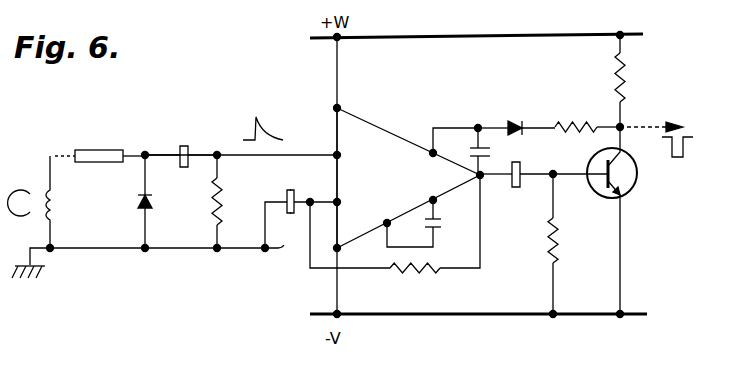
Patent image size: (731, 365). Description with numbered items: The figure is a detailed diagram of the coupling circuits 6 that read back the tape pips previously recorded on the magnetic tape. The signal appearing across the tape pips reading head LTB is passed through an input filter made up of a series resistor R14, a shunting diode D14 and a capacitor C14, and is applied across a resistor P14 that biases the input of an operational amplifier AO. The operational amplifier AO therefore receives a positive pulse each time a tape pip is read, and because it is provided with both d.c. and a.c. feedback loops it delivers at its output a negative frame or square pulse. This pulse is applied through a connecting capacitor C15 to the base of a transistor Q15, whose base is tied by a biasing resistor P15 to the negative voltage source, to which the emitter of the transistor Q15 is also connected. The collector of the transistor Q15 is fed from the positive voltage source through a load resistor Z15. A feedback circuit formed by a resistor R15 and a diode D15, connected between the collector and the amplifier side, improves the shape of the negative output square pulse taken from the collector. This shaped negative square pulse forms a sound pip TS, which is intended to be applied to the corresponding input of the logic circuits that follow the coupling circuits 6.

The coupling circuits 6 is at (288, 97).
The tape pips reading head LTB is at (39, 217).
The resistor R14 is at (90, 152).
The capacitor C14 is at (176, 150).
The shunting diode D14 is at (136, 192).
The resistor P14 is at (225, 200).
The operational amplifier AO is at (400, 190).
The diode D15 is at (508, 123).
The resistor R15 is at (578, 123).
The load resistor Z15 is at (628, 88).
The connecting capacitor C15 is at (512, 180).
The biasing resistor P15 is at (558, 238).
The transistor Q15 is at (630, 188).
The sound pip TS is at (679, 160).